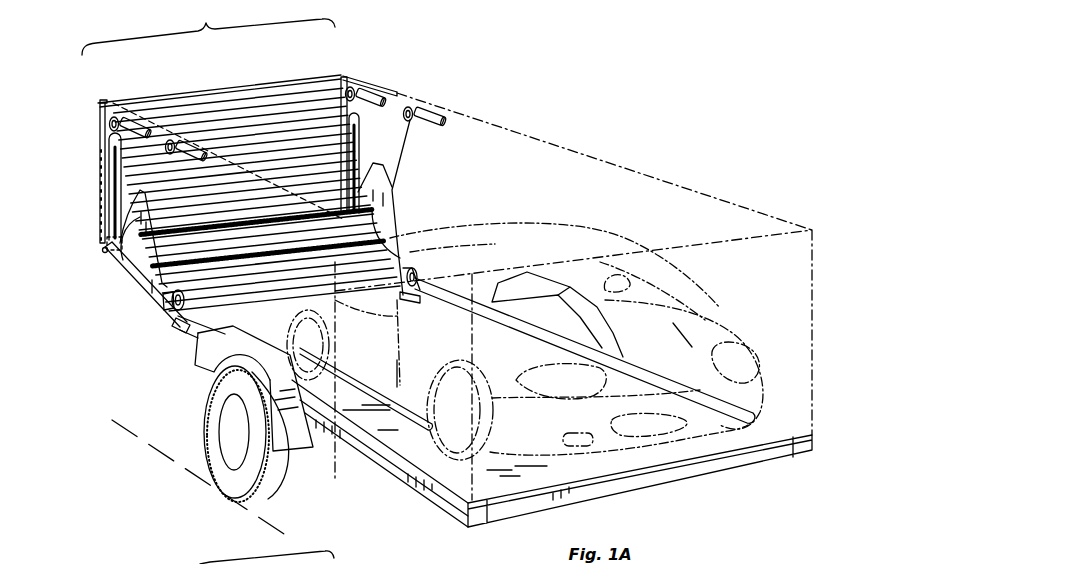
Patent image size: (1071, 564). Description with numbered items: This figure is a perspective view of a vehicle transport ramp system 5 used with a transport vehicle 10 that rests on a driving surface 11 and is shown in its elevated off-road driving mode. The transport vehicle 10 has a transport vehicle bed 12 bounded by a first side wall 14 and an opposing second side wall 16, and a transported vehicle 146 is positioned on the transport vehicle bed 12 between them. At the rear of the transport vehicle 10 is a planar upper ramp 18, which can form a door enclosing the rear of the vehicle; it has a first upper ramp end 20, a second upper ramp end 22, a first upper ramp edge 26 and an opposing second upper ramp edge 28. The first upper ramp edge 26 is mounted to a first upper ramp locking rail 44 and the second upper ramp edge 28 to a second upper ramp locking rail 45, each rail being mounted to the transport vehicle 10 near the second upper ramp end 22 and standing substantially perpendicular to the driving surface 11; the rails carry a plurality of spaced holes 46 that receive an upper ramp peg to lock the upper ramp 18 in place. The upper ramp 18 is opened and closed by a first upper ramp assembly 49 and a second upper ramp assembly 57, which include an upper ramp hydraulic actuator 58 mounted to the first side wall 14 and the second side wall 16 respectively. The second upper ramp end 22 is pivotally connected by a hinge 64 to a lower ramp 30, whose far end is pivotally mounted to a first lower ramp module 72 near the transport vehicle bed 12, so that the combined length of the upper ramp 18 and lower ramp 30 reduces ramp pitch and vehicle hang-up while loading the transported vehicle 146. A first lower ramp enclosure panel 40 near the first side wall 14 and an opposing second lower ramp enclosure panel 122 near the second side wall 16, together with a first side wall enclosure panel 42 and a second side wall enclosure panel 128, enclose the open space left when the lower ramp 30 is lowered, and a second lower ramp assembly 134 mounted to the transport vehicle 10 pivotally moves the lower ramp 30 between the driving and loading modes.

The vehicle transport ramp system 5 is at (208, 285).
The transport vehicle 10 is at (605, 130).
The driving surface 11 is at (162, 453).
The transport vehicle bed 12 is at (380, 430).
The first side wall 14 is at (416, 236).
The second side wall 16 is at (679, 182).
The upper ramp 18 is at (272, 107).
The first upper ramp end 20 is at (234, 90).
The second upper ramp end 22 is at (213, 210).
The first upper ramp edge 26 is at (106, 102).
The second upper ramp edge 28 is at (340, 79).
The lower ramp 30 is at (148, 292).
The first lower ramp enclosure panel 40 is at (110, 265).
The first side wall enclosure panel 42 is at (108, 158).
The first upper ramp locking rail 44 is at (98, 120).
The second upper ramp locking rail 45 is at (349, 88).
The spaced holes 46 is at (101, 218).
The first upper ramp assembly 49 is at (131, 111).
The second upper ramp assembly 57 is at (401, 90).
The upper ramp hydraulic actuator 58 is at (141, 118).
The hinge 64 is at (104, 251).
The first lower ramp module 72 is at (172, 320).
The second lower ramp enclosure panel 122 is at (395, 208).
The second side wall enclosure panel 128 is at (358, 137).
The second lower ramp assembly 134 is at (440, 109).
The transported vehicle 146 is at (703, 317).